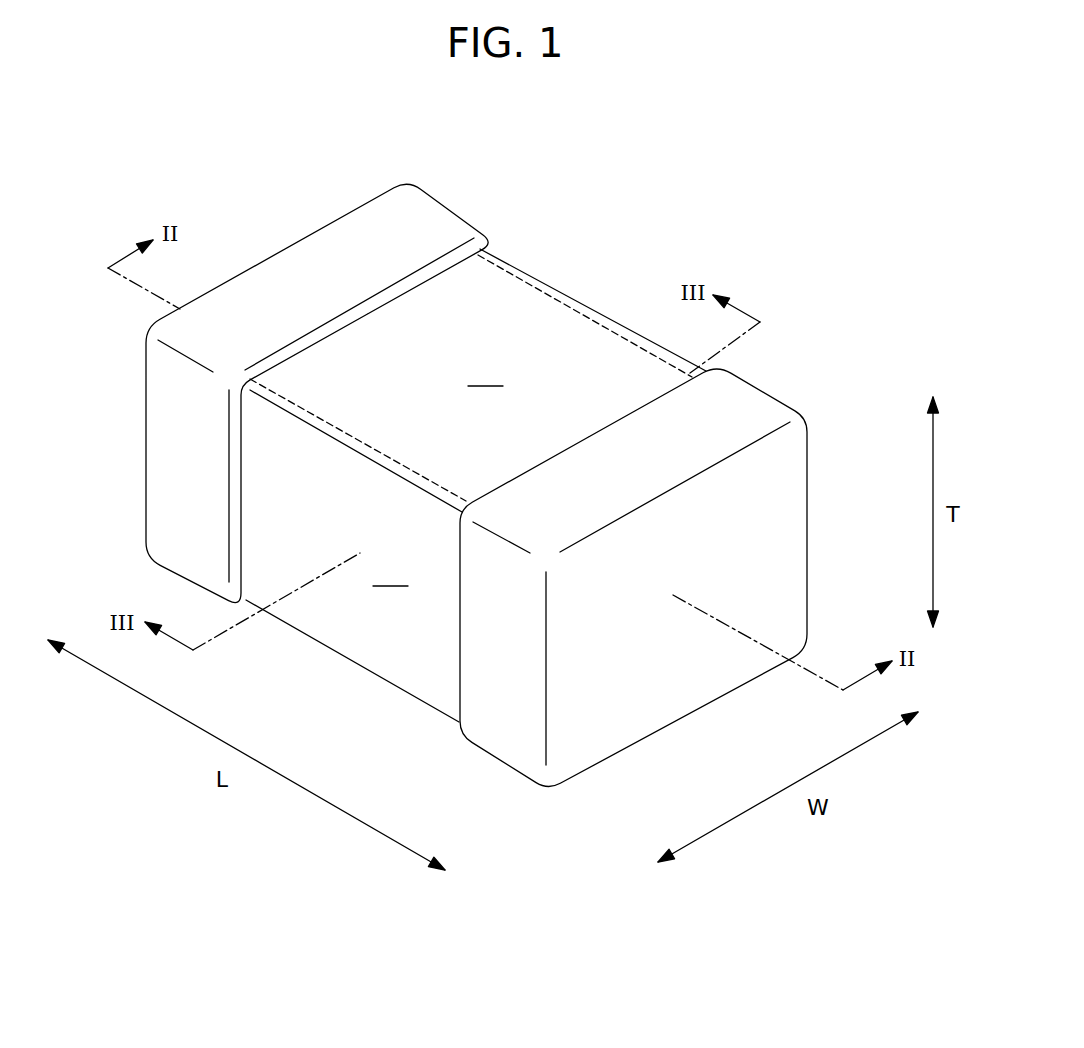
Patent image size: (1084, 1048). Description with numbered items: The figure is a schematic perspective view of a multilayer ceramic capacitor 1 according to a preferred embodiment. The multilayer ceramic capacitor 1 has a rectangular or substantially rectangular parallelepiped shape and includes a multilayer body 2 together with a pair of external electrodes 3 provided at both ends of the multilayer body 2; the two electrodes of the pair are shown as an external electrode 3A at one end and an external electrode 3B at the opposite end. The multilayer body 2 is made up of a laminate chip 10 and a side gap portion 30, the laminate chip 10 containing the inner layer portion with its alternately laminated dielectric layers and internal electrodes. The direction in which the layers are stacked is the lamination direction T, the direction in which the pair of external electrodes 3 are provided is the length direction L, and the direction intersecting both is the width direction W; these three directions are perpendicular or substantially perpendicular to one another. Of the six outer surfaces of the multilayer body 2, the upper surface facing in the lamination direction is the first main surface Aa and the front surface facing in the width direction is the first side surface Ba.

The multilayer ceramic capacitor 1 is at (840, 258).
The multilayer body 2 is at (393, 153).
The laminate chip 10 is at (392, 330).
The side gap portion 30 is at (331, 428).
The external electrodes 3 is at (492, 455).
The external electrode 3A is at (410, 213).
The external electrode 3B is at (757, 397).